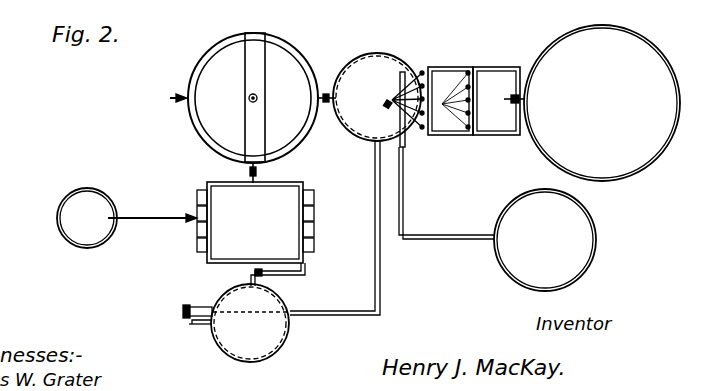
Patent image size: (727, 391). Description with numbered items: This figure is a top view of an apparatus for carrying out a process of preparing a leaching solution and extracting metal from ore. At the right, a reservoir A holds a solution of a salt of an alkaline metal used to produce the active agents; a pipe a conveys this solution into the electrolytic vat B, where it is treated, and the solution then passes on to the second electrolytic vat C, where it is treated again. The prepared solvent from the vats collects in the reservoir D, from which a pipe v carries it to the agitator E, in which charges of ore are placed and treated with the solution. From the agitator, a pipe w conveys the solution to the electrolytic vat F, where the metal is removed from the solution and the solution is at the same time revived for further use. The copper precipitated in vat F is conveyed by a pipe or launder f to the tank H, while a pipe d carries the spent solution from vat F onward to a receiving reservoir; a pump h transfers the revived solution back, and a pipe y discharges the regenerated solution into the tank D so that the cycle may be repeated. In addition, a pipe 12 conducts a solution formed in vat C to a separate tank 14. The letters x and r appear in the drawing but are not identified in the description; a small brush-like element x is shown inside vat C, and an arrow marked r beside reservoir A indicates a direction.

The agitator E is at (278, 32).
The pipe w is at (262, 171).
The pipe v is at (327, 93).
The reservoir D is at (382, 53).
The pipe d is at (308, 276).
The electrolytic vat C is at (448, 66).
The contacts x is at (454, 100).
The electrolytic vat B is at (498, 66).
The reservoir A is at (594, 25).
The direction of rotation r is at (698, 130).
The pipe 12 is at (433, 235).
The tank 14 is at (586, 255).
The pipe y is at (382, 192).
The electrolytic vat F is at (291, 202).
The tank H is at (83, 250).
The pipe or launder f is at (150, 216).
The pipe a is at (358, 226).
The pump h is at (197, 305).